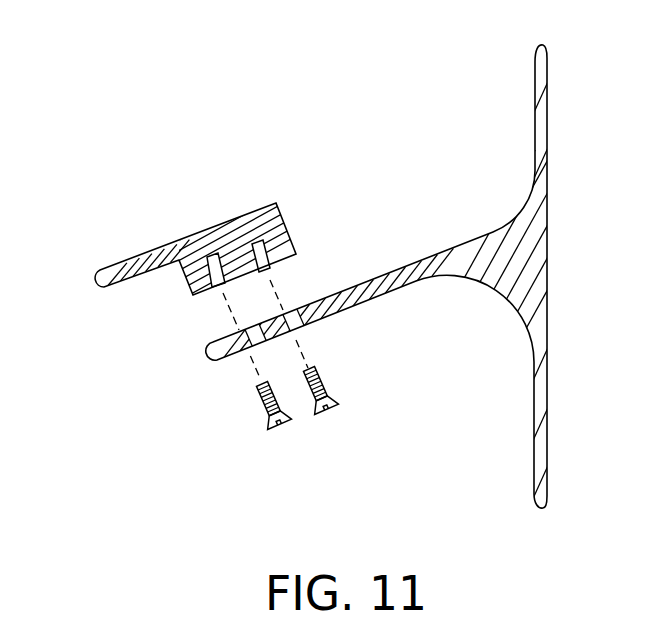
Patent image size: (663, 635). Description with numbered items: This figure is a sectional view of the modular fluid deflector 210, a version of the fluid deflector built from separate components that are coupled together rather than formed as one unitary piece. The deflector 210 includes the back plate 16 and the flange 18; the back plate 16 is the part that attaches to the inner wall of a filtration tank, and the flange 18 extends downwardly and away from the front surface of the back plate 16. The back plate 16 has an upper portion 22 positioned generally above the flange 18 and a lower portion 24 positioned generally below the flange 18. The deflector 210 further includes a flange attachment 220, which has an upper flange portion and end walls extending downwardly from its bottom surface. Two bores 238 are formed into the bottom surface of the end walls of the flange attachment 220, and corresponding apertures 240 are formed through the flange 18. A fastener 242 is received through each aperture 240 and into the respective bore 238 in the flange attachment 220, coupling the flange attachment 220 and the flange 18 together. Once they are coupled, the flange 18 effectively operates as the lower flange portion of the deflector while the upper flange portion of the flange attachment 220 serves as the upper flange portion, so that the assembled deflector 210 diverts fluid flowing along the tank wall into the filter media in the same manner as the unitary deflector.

The fluid deflector 210 is at (327, 273).
The flange attachment 220 is at (190, 249).
The bores 238 is at (217, 287).
The apertures 240 is at (250, 351).
The fastener 242 is at (268, 406).
The back plate 16 is at (407, 273).
The flange 18 is at (407, 296).
The upper portion 22 is at (541, 70).
The lower portion 24 is at (542, 450).